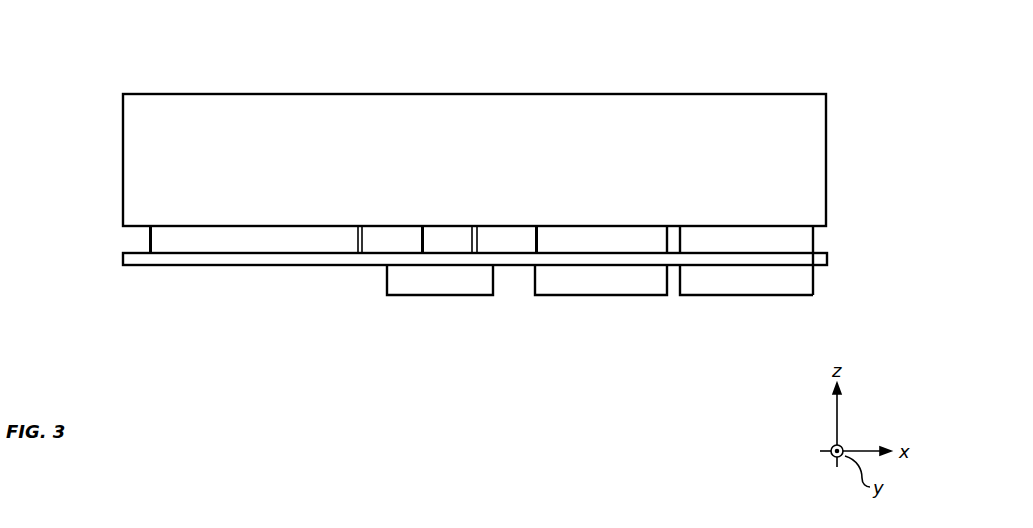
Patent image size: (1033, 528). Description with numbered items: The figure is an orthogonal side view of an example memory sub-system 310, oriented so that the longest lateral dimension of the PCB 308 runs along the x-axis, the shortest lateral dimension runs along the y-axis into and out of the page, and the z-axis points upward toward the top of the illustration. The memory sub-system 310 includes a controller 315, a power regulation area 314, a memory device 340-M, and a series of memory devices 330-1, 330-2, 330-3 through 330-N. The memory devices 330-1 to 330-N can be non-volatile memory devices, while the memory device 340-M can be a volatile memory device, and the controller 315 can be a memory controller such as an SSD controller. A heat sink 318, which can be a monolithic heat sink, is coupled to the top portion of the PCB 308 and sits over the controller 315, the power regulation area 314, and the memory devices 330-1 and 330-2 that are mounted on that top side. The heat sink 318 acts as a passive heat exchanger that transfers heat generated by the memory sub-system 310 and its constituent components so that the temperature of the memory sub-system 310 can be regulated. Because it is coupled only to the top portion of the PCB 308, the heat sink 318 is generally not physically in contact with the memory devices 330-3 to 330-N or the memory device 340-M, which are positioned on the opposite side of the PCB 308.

The memory sub-system 310 is at (792, 58).
The heat sink 318 is at (123, 134).
The PCB 308 is at (123, 255).
The controller 315 is at (175, 241).
The power regulation area 314 is at (461, 245).
The memory device 340-M is at (397, 285).
The memory device 330-1 is at (562, 245).
The memory device 330-2 is at (797, 245).
The memory device 330-3 is at (633, 283).
The memory device 330-N is at (715, 283).